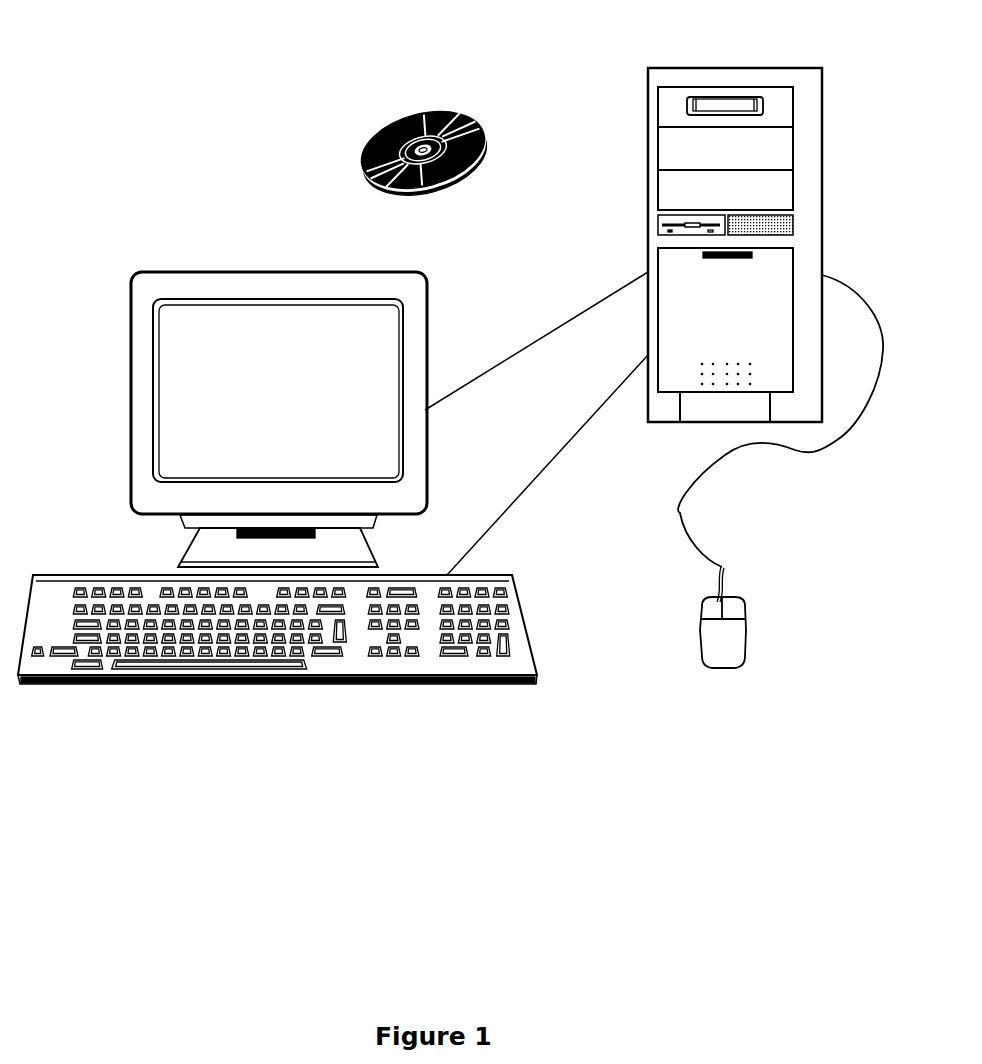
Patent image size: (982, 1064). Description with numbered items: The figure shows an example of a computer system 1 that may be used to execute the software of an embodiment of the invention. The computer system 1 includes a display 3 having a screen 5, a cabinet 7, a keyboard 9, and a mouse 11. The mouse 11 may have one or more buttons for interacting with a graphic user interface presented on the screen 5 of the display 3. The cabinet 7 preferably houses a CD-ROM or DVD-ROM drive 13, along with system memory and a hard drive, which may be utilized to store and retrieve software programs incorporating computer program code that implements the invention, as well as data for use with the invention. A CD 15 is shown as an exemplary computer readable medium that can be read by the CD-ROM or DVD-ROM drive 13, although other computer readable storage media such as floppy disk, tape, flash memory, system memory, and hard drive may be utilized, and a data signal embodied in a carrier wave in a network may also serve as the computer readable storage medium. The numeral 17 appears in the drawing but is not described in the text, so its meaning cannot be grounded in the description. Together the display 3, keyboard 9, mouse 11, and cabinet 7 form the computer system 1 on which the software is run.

The computer system 1 is at (168, 70).
The display 3 is at (425, 333).
The screen 5 is at (167, 338).
The cabinet 7 is at (822, 118).
The keyboard 9 is at (132, 687).
The mouse 11 is at (728, 633).
The CD-ROM or DVD-ROM drive 13 is at (715, 603).
The CD 15 is at (658, 220).
The compact disc 17 is at (387, 127).